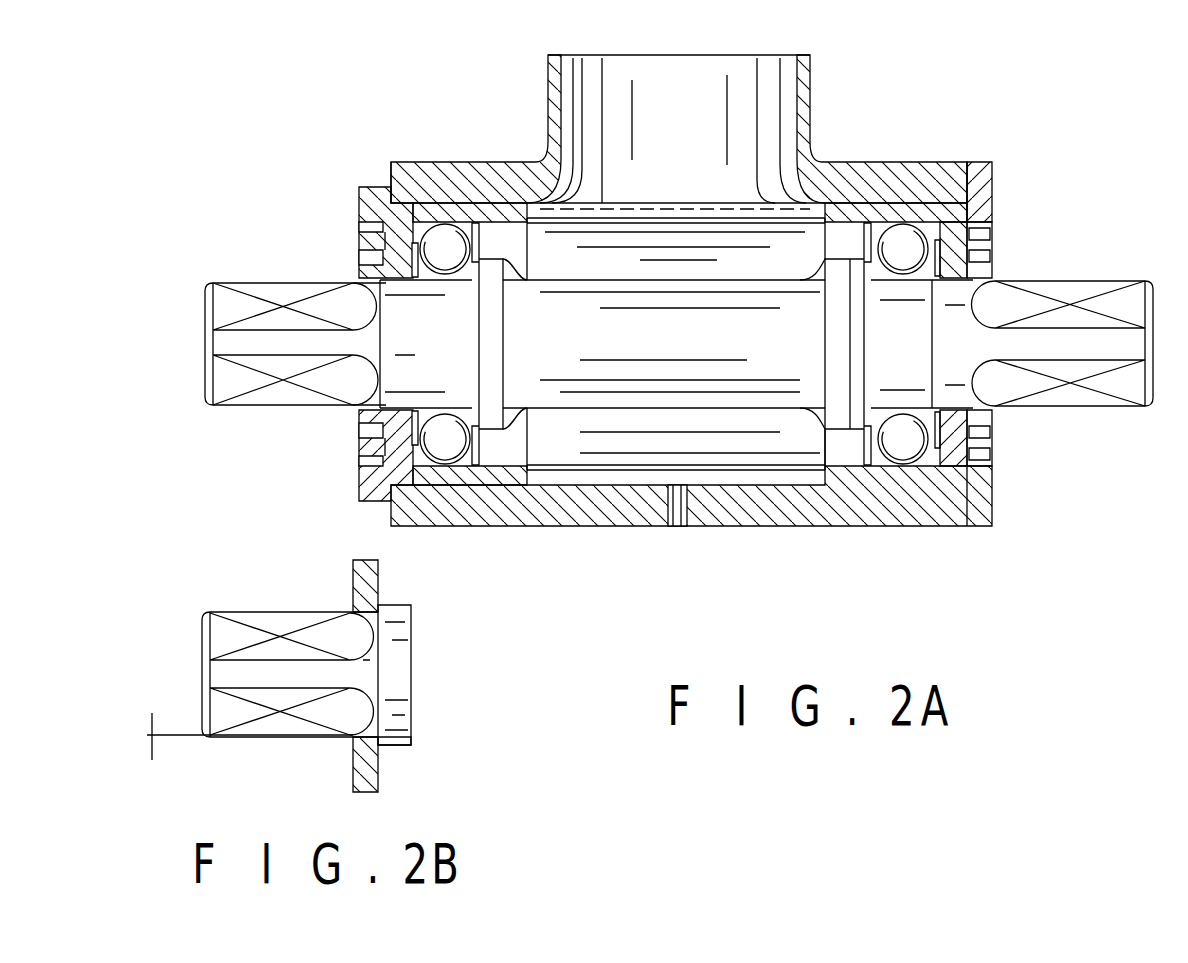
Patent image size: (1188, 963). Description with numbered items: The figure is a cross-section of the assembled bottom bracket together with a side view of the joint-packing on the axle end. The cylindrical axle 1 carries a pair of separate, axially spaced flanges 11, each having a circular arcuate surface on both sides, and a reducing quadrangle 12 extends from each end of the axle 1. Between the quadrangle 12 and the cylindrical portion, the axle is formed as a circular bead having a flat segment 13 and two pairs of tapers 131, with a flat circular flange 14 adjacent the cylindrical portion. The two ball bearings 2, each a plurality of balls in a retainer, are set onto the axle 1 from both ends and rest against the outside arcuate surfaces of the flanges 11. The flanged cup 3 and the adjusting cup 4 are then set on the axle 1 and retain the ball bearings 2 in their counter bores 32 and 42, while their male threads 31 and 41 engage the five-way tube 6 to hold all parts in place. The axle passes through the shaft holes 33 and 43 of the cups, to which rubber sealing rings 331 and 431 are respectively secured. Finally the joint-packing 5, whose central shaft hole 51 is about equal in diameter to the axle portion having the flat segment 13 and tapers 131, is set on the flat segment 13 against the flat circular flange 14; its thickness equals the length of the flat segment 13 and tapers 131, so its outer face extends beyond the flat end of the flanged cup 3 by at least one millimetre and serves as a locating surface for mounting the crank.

In FIG. 2A, the axle 1 is at (740, 397).
In FIG. 2A, the flange 11 is at (496, 438).
In FIG. 2A, the reducing quadrangle 12 is at (247, 287).
In FIG. 2B, the reducing quadrangle 12 is at (262, 620).
In FIG. 2A, the flat segment 13 is at (370, 418).
In FIG. 2B, the flat segment 13 is at (372, 677).
In FIG. 2A, the tapers 131 is at (360, 385).
In FIG. 2B, the tapers 131 is at (358, 713).
In FIG. 2A, the flat circular flange 14 is at (360, 275).
In FIG. 2B, the flat circular flange 14 is at (378, 740).
In FIG. 2A, the ball bearings 2 is at (448, 227).
In FIG. 2A, the flanged cup 3 is at (480, 212).
In FIG. 2A, the male threads 31 is at (517, 202).
In FIG. 2A, the counter bore 32 is at (427, 227).
In FIG. 2A, the shaft hole 33 is at (400, 267).
In FIG. 2A, the rubber sealing ring 331 is at (362, 252).
In FIG. 2A, the adjusting cup 4 is at (945, 213).
In FIG. 2A, the male threads 41 is at (853, 200).
In FIG. 2A, the counter bore 42 is at (923, 475).
In FIG. 2A, the shaft hole 43 is at (962, 427).
In FIG. 2A, the rubber sealing ring 431 is at (980, 420).
In FIG. 2B, the joint-packing 5 is at (378, 568).
In FIG. 2B, the shaft hole 51 is at (378, 600).
In FIG. 2A, the five-way tube 6 is at (807, 70).